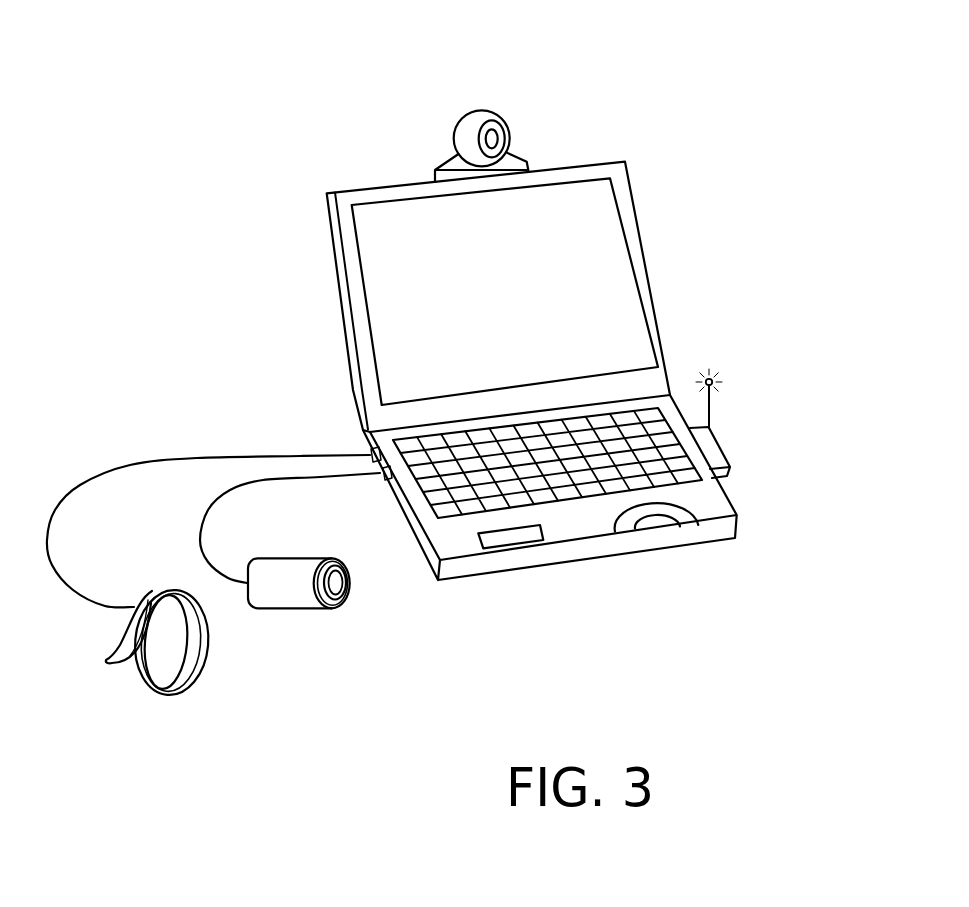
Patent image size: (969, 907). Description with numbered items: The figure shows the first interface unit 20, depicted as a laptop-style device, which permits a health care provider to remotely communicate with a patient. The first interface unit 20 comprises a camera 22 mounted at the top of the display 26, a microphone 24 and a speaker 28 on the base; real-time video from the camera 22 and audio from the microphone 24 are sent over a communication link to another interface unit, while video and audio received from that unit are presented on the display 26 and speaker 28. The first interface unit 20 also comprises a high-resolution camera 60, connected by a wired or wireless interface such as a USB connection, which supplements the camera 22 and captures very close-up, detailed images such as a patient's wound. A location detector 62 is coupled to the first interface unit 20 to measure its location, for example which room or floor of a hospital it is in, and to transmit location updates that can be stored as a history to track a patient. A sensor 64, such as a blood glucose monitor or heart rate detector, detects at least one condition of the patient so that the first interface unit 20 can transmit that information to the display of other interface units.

The first interface unit 20 is at (755, 112).
The camera 22 is at (482, 110).
The microphone 24 is at (517, 540).
The display 26 is at (617, 262).
The speaker 28 is at (655, 525).
The high-resolution camera 60 is at (285, 603).
The location detector 62 is at (715, 457).
The sensor 64 is at (155, 694).